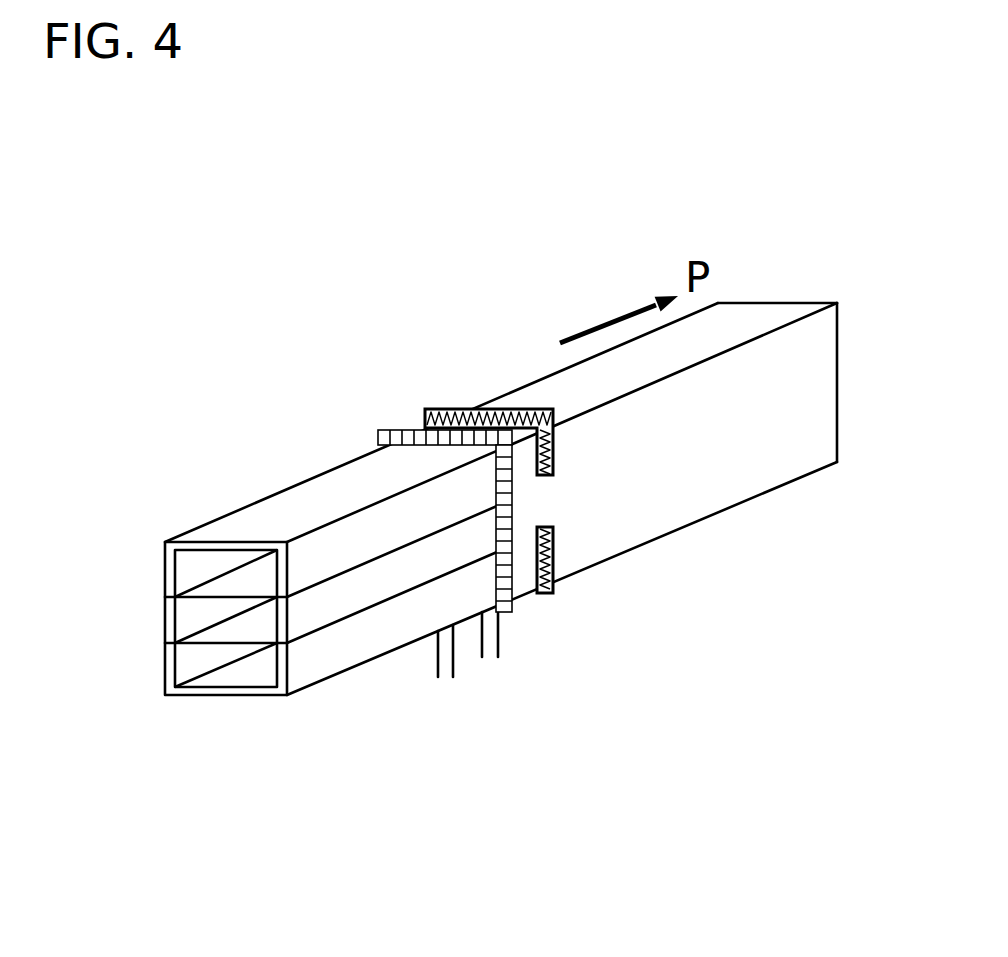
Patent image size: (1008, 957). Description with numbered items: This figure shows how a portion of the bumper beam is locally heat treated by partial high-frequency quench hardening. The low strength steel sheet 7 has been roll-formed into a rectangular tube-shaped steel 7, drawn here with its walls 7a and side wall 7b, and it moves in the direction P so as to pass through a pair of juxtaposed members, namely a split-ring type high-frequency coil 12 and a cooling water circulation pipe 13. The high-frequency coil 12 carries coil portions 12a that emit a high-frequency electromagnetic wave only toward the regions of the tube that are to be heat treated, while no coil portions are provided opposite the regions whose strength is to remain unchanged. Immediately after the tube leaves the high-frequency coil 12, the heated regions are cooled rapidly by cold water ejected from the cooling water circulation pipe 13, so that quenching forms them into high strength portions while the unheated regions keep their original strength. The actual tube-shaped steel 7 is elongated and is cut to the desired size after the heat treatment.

The tube-shaped steel 7 is at (740, 513).
The wall plate of tube member 7a is at (285, 505).
The side wall of tube member 7b is at (377, 580).
The high-frequency coil 12 is at (609, 428).
The coil portions 12a is at (498, 412).
The cooling water circulation pipe 13 is at (403, 432).